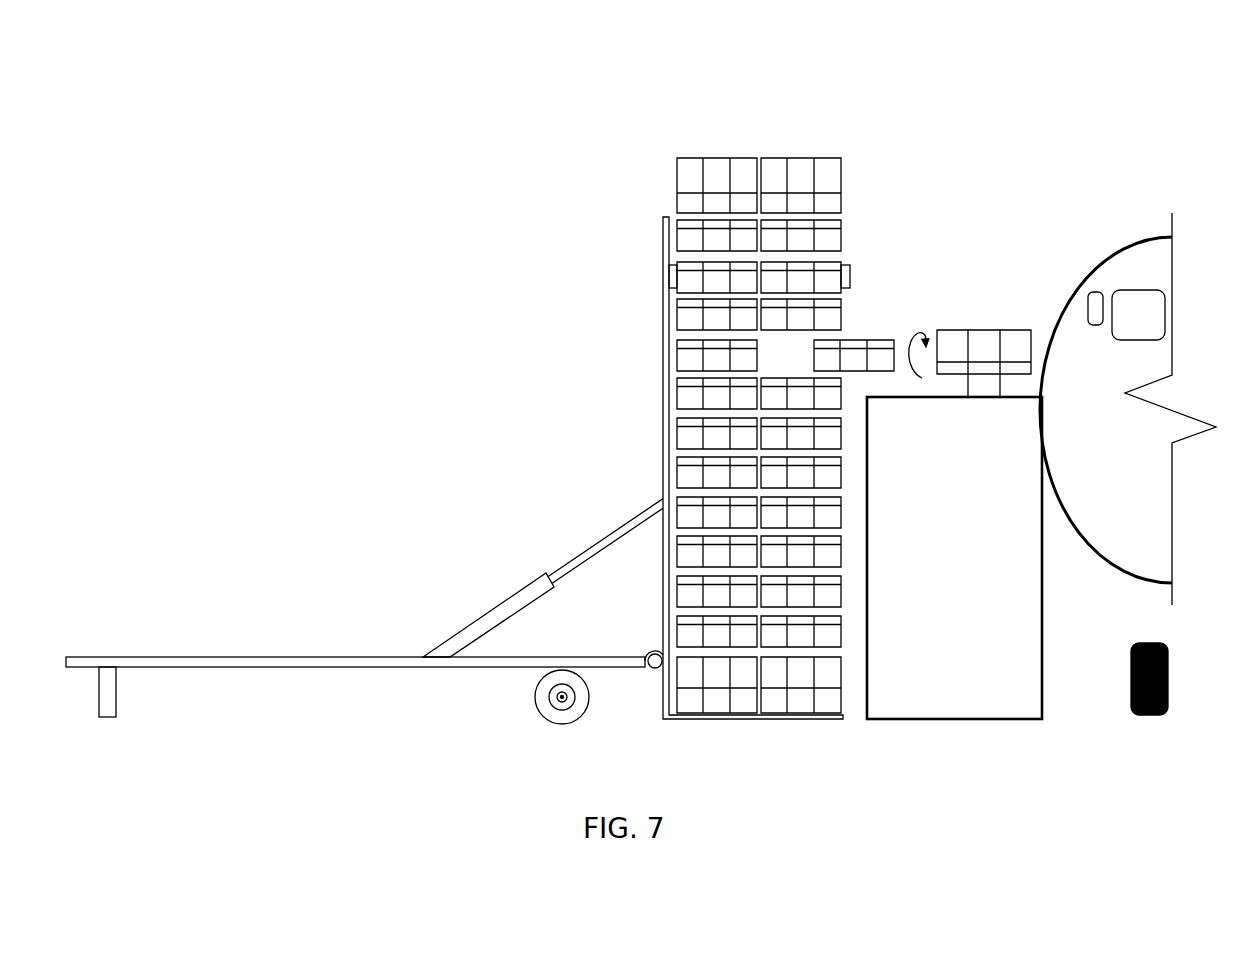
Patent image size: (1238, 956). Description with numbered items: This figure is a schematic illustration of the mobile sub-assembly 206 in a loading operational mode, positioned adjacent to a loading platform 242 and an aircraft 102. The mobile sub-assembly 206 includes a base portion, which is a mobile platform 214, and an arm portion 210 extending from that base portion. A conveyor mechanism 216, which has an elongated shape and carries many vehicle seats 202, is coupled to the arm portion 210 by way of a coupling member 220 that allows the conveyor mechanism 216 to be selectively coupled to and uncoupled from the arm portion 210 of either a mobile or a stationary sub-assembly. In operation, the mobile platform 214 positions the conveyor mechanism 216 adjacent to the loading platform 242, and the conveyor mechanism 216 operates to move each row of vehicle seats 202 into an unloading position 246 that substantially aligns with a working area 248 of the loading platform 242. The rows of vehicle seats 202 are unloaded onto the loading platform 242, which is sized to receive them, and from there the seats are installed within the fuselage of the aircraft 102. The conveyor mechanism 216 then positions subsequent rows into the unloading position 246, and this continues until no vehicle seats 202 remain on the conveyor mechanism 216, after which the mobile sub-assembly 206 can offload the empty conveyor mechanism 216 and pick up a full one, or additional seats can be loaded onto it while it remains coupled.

The aircraft 102 is at (1145, 95).
The vehicle seats 202 is at (802, 157).
The mobile sub-assembly 206 is at (268, 308).
The arm portion 210 is at (663, 463).
The mobile platform 214 is at (357, 657).
The conveyor mechanism 216 is at (880, 172).
The coupling member 220 is at (850, 275).
The loading platform 242 is at (1042, 622).
The unloading position 246 is at (870, 305).
The working area 248 is at (956, 290).